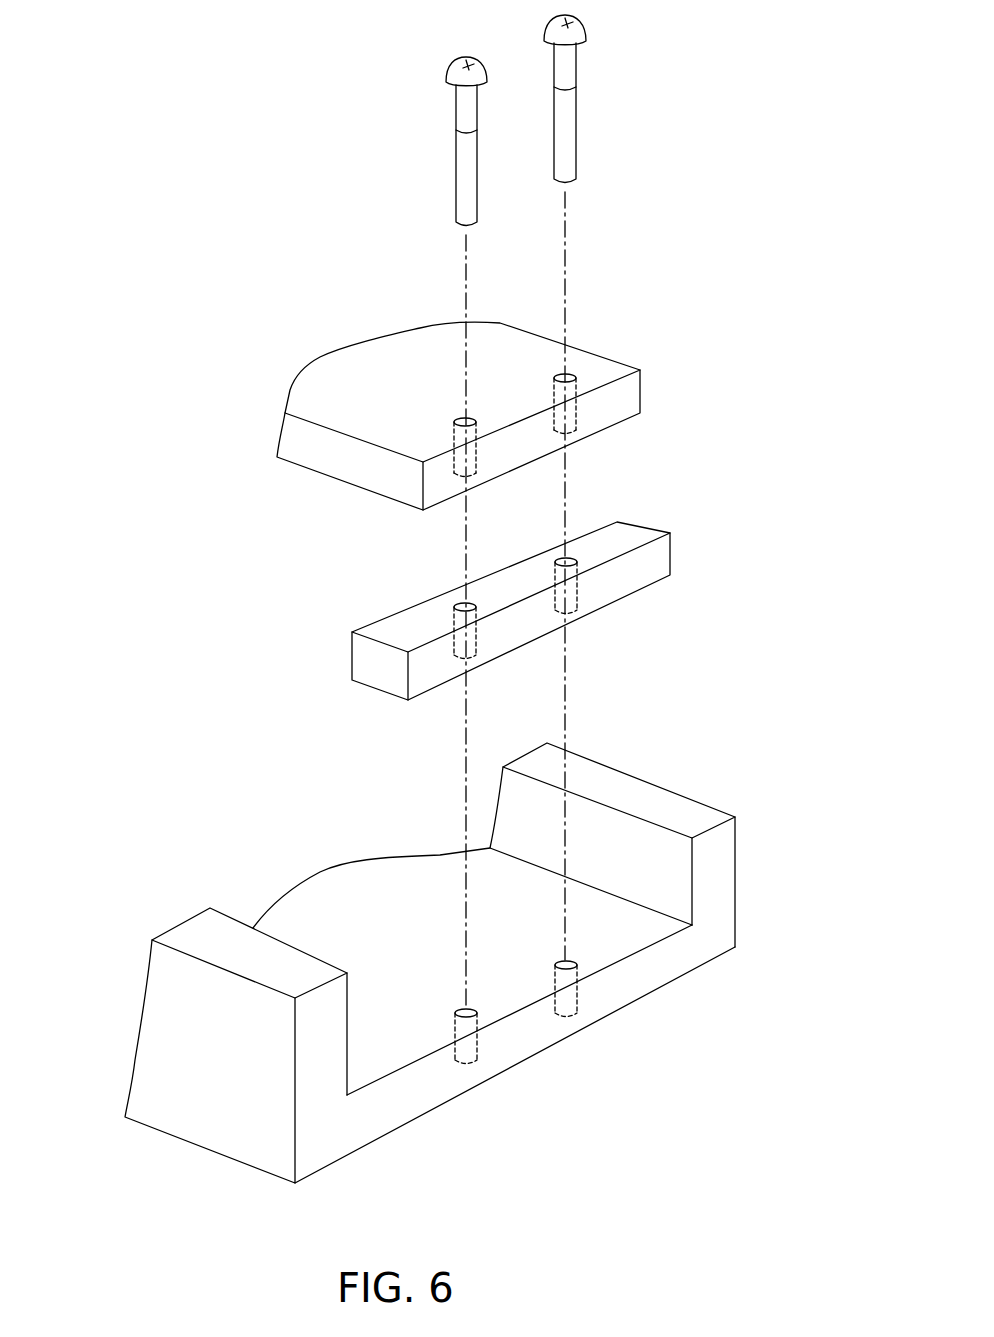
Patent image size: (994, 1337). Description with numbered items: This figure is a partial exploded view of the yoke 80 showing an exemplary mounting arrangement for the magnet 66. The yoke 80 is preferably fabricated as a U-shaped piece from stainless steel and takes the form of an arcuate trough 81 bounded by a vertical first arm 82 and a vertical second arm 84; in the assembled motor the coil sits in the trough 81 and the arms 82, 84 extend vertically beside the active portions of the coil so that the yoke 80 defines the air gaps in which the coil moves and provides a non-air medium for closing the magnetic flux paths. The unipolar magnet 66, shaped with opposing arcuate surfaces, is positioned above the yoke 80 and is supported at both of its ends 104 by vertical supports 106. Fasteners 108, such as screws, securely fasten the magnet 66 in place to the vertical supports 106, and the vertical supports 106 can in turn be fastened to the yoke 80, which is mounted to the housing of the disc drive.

The unipolar magnet 66 is at (472, 416).
The yoke 80 is at (441, 933).
The arcuate trough 81 is at (633, 985).
The vertical first arm 82 is at (172, 995).
The vertical second arm 84 is at (720, 843).
The ends of the magnet 104 is at (597, 413).
The vertical supports 106 is at (363, 655).
The fasteners 108 is at (455, 172).